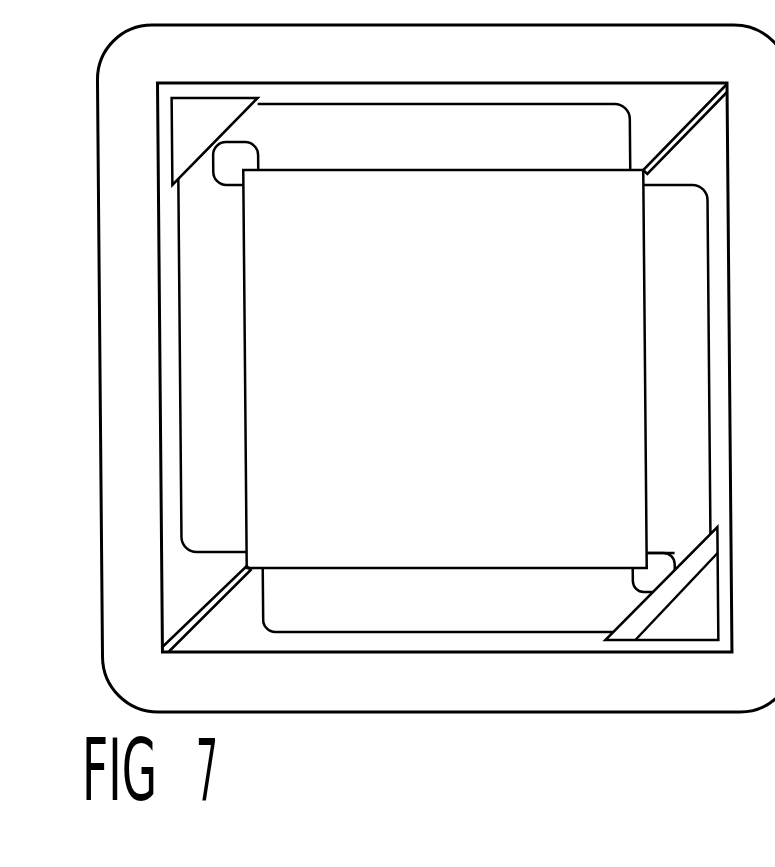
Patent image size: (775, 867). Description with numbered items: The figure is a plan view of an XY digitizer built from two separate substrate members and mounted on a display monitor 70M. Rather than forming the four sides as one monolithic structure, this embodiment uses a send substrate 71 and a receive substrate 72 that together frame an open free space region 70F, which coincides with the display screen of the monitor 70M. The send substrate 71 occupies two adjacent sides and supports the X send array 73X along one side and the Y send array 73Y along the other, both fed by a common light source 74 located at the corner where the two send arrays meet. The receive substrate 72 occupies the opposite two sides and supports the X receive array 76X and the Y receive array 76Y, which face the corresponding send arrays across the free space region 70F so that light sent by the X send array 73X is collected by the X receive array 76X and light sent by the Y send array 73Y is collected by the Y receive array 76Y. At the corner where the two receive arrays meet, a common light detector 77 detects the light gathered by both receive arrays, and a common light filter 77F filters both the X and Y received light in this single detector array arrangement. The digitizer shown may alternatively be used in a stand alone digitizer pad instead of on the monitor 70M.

The display monitor 70M is at (414, 69).
The free space region 70F is at (407, 320).
The send substrate 71 is at (222, 545).
The receive substrate 72 is at (273, 604).
The X send array 73X is at (245, 426).
The Y send array 73Y is at (464, 172).
The common light source 74 is at (217, 135).
The X receive array 76X is at (645, 423).
The Y receive array 76Y is at (469, 566).
The common light detector 77 is at (706, 632).
The common light filter 77F is at (690, 566).